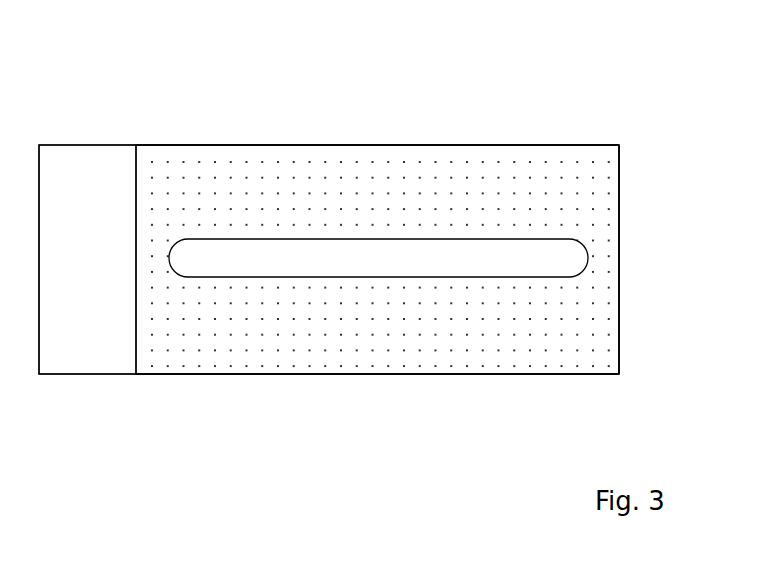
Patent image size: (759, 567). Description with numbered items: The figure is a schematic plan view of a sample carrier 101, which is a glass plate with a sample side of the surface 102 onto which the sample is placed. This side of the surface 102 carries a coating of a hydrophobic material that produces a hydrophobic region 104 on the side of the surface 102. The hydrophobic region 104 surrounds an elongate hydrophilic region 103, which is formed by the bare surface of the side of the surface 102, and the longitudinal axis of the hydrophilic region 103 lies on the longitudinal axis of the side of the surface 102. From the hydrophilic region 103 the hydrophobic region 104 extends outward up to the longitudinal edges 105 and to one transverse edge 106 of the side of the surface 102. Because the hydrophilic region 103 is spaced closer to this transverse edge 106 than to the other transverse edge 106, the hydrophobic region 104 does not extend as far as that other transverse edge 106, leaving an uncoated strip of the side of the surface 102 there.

The sample carrier 101 is at (325, 60).
The side of the surface 102 is at (112, 225).
The hydrophilic region 103 is at (398, 272).
The hydrophobic region 104 is at (563, 183).
The longitudinal edges 105 is at (467, 145).
The transverse edge 106 is at (619, 332).